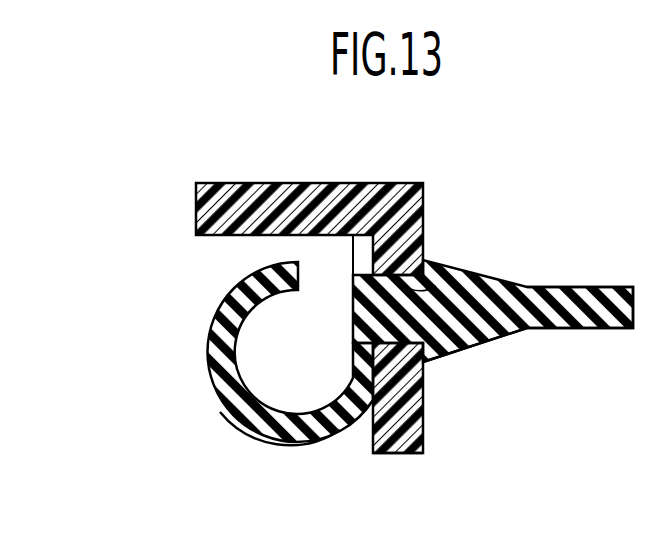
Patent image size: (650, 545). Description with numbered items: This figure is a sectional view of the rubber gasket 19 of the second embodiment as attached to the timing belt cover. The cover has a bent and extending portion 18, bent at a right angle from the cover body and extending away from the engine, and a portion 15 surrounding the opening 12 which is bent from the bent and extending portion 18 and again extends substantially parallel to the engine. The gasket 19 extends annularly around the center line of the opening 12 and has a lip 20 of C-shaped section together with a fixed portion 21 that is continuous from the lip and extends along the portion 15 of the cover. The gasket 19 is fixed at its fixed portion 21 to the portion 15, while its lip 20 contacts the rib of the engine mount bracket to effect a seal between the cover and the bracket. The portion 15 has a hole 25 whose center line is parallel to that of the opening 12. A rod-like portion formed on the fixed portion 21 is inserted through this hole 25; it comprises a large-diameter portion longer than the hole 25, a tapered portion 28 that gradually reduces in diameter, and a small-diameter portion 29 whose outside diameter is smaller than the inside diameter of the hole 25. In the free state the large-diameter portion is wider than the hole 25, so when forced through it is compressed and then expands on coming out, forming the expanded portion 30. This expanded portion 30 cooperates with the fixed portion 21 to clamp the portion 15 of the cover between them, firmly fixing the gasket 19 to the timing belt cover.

The opening 12 is at (392, 453).
The portion of the timing belt cover surrounding the opening 15 is at (412, 427).
The bent and extending portion 18 is at (323, 192).
The gasket 19 is at (228, 300).
The lip 20 is at (252, 422).
The fixed portion 21 is at (353, 258).
The hole 25 is at (447, 290).
The tapered portion 28 is at (498, 342).
The small-diameter portion 29 is at (583, 330).
The expanded portion 30 is at (430, 268).